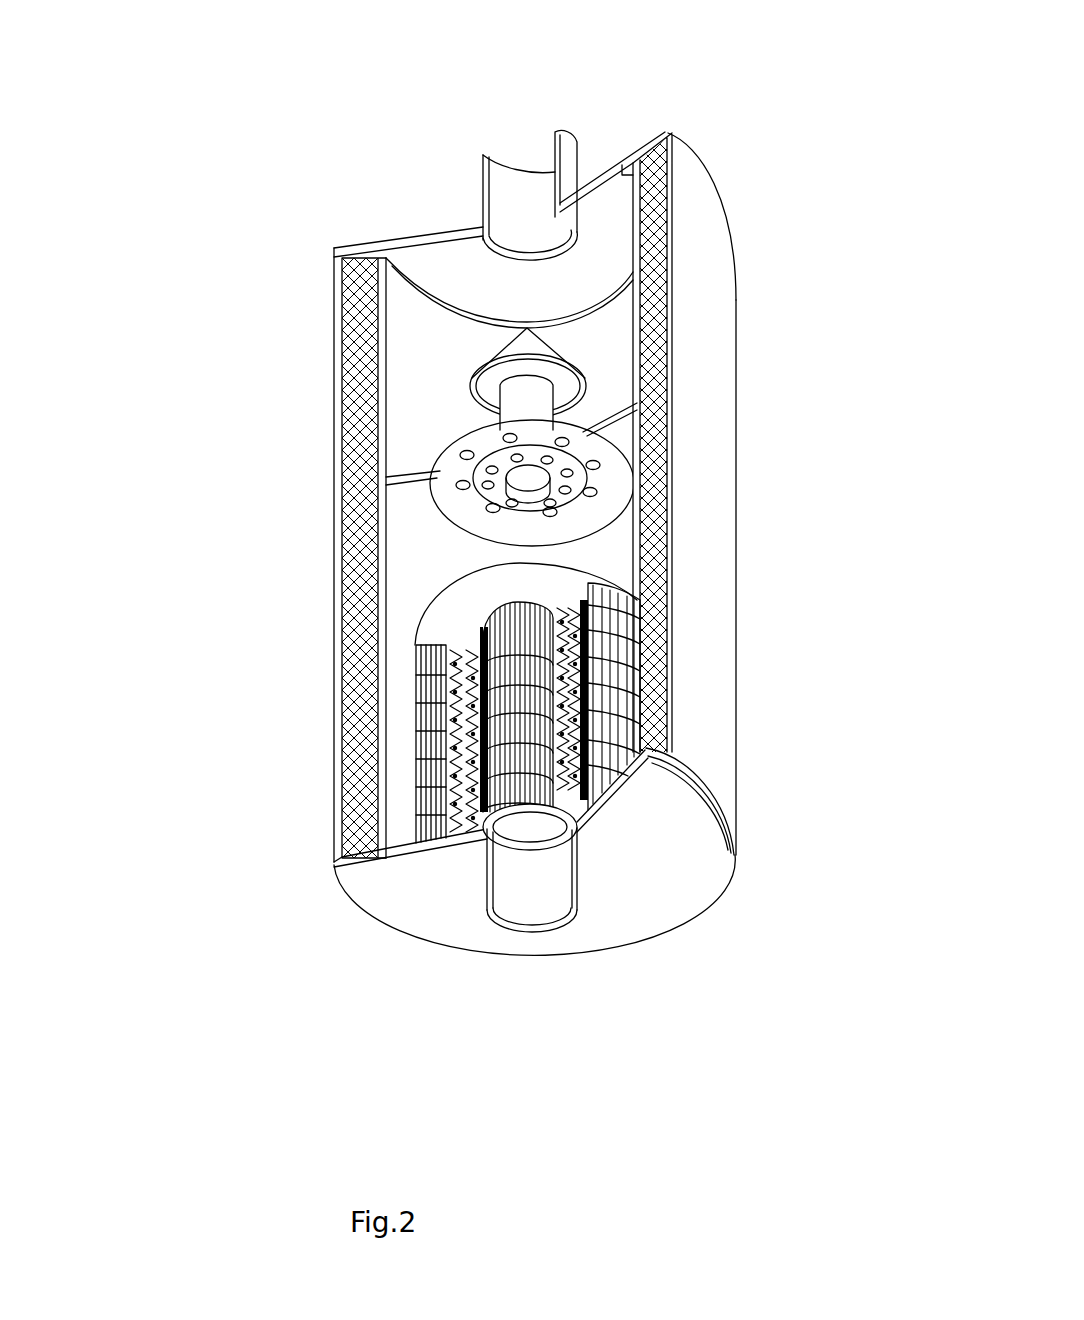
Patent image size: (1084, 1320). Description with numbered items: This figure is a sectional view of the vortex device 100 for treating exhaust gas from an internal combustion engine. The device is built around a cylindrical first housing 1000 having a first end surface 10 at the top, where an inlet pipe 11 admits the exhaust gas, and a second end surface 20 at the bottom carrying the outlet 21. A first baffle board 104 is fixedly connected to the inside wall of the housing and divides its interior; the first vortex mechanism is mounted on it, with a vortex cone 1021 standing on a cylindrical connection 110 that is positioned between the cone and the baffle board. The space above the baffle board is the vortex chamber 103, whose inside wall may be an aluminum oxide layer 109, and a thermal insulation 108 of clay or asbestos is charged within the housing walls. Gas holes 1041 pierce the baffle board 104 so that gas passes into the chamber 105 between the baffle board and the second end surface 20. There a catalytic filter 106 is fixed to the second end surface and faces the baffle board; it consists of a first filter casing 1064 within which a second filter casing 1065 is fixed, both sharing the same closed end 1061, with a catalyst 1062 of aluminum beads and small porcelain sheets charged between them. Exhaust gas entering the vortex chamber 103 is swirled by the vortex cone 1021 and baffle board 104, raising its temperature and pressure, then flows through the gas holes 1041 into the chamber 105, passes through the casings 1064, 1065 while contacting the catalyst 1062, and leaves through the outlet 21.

The first end surface 10 is at (608, 195).
The inlet pipe 11 is at (525, 218).
The second end surface 20 is at (630, 873).
The outlet 21 is at (527, 887).
The vortex device 100 is at (318, 270).
The first housing 1000 is at (333, 322).
The vortex chamber 103 is at (428, 387).
The first baffle board 104 is at (637, 405).
The gas holes 1041 is at (458, 485).
The chamber 105 is at (613, 557).
The catalytic filter 106 is at (418, 690).
The closed end 1061 is at (535, 590).
The catalyst 1062 is at (335, 875).
The first filter casing 1064 is at (430, 712).
The second filter casing 1065 is at (728, 800).
The thermal insulation 108 is at (655, 252).
The Al2O3 layer 109 is at (383, 383).
The cylindrical connection 110 is at (533, 400).
The vortex cone 1021 is at (528, 342).